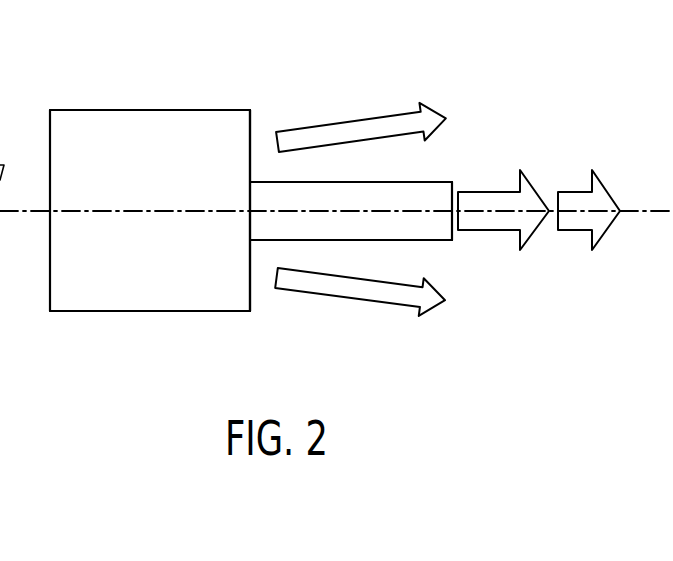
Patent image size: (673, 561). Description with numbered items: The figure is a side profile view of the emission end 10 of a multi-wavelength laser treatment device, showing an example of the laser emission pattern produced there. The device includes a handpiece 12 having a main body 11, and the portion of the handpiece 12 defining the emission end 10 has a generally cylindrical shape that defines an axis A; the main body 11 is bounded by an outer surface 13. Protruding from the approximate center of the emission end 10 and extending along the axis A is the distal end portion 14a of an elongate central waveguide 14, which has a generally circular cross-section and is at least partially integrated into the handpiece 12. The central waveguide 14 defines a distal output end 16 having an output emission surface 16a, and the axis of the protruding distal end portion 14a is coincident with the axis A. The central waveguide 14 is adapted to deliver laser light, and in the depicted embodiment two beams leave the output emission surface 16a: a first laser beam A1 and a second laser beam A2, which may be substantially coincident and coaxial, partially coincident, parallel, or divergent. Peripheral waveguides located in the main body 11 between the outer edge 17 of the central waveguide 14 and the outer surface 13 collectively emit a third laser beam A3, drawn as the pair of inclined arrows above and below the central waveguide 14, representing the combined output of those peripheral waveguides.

The emission end 10 is at (252, 122).
The main body 11 is at (175, 130).
The handpiece 12 is at (103, 89).
The outer surface 13 is at (148, 312).
The central waveguide 14 is at (424, 220).
The distal end portion 14a is at (362, 230).
The output end 16 is at (454, 186).
The output emission surface 16a is at (453, 241).
The outer edge 17 is at (332, 197).
The axis A is at (20, 211).
The first laser beam A1 is at (608, 232).
The second laser beam A2 is at (535, 232).
The third laser beam A3 is at (400, 114).